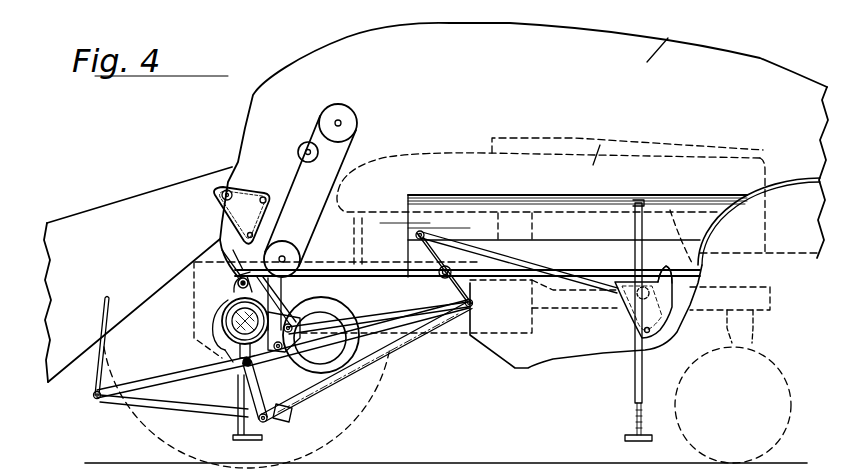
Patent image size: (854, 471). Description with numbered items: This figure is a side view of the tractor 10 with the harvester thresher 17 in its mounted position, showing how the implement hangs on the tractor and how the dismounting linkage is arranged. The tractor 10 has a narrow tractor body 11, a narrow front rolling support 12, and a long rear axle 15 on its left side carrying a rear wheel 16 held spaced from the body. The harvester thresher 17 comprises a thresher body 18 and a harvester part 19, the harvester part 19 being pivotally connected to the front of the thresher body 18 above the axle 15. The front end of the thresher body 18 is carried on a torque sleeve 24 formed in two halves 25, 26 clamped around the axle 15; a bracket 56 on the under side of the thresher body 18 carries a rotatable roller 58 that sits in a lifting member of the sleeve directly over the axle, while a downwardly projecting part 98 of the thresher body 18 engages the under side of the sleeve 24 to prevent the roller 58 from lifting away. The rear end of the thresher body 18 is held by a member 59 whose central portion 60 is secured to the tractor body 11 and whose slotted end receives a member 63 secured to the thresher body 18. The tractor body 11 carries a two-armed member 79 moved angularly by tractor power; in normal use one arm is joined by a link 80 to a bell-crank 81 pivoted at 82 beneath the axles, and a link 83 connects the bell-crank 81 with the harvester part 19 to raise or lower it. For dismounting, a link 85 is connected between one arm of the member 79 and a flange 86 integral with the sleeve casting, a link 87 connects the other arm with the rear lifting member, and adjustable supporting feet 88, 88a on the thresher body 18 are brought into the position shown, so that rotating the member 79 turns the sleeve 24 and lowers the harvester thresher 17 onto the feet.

The tractor 10 is at (577, 128).
The tractor body 11 is at (609, 146).
The narrow front rolling support 12 is at (773, 358).
The long rear axle 15 is at (215, 347).
The rear wheel 16 is at (368, 406).
The harvester thresher 17 is at (621, 33).
The thresher body 18 is at (665, 41).
The harvester part 19 is at (120, 210).
The torque sleeve 24 is at (224, 304).
The half of torque sleeve 25 is at (291, 323).
The half of torque sleeve 26 is at (224, 322).
The bracket 56 is at (236, 276).
The rotatable roller 58 is at (237, 286).
The member 59 is at (625, 324).
The central portion 60 is at (620, 314).
The member 63 is at (646, 310).
The two-armed member 79 is at (418, 246).
The link 80 is at (276, 418).
The bell-crank 81 is at (162, 376).
The pivot 82 is at (238, 372).
The link 83 is at (97, 380).
The link 85 is at (423, 316).
The flange 86 is at (267, 391).
The link 87 is at (522, 267).
The adjustable supporting foot 88 is at (633, 384).
The adjustable supporting foot 88a is at (243, 395).
The part 98 is at (280, 293).